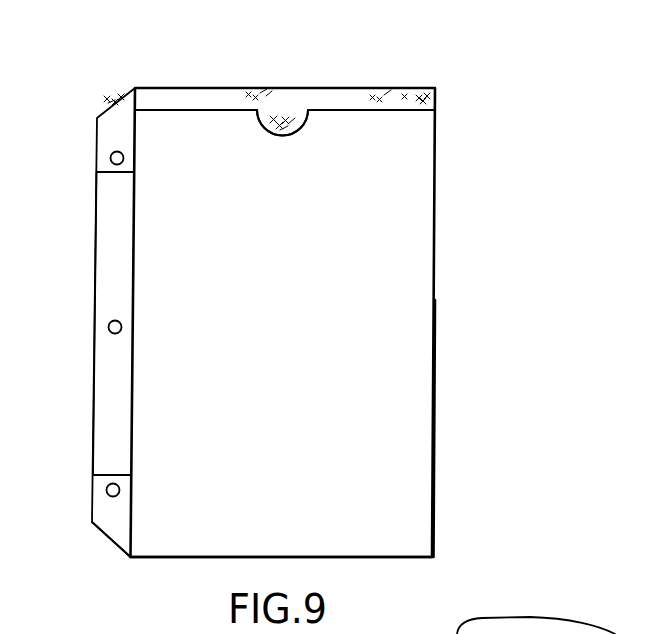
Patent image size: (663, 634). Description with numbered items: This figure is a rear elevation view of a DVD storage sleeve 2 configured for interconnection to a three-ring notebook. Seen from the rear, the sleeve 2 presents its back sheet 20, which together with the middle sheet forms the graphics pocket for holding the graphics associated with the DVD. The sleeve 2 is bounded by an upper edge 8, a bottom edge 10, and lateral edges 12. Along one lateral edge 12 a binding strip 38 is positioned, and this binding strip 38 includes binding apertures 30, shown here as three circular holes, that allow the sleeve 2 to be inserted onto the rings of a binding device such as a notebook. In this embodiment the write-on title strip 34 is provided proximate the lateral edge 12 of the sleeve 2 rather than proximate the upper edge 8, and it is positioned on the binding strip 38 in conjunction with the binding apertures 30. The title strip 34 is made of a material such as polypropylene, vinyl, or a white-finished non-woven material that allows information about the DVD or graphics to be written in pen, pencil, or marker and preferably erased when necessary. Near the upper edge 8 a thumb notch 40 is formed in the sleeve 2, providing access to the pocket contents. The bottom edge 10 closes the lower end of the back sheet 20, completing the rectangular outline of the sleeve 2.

The sleeve 2 is at (482, 97).
The upper edge 8 is at (210, 88).
The bottom edge 10 is at (400, 560).
The lateral edge 12 is at (127, 518).
The back sheet 20 is at (415, 240).
The binding aperture 30 is at (110, 158).
The title strip 34 is at (98, 200).
The binding strip 38 is at (108, 120).
The thumb notch 40 is at (306, 108).